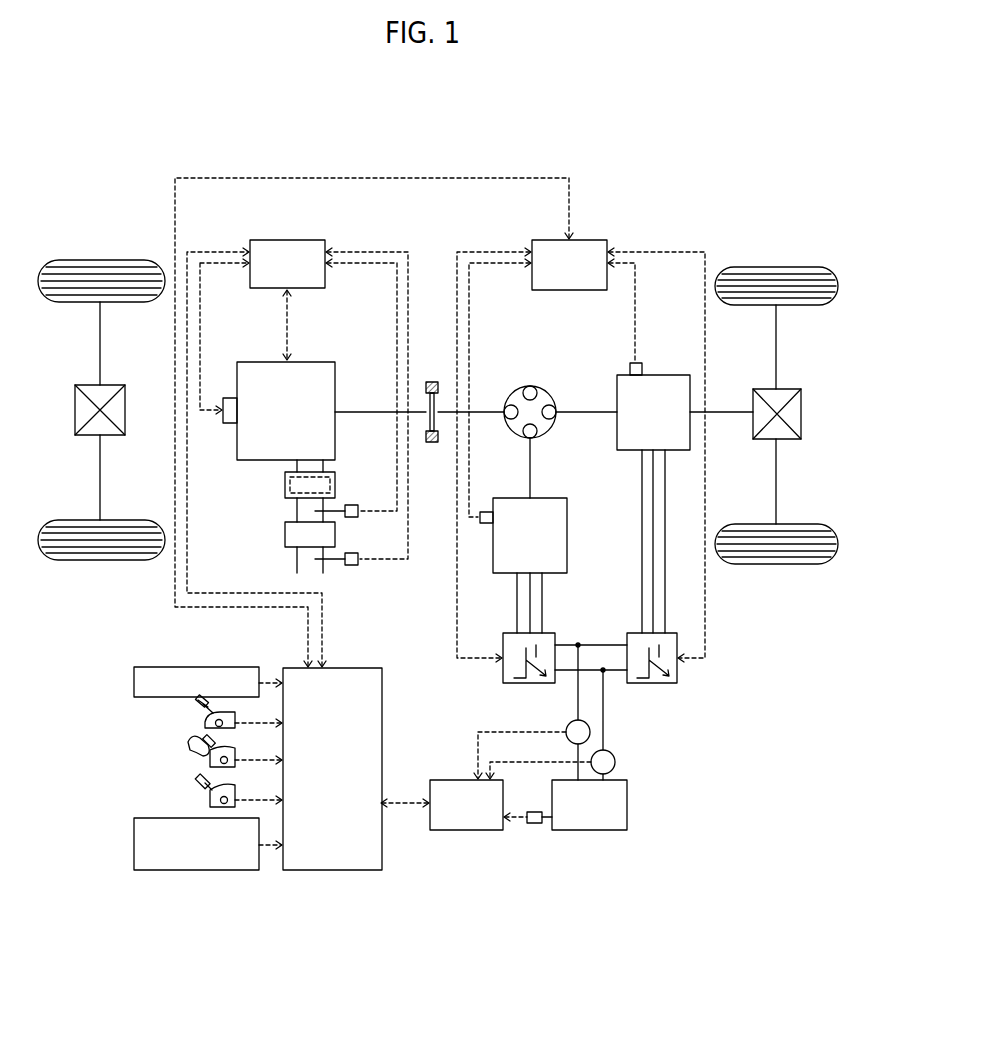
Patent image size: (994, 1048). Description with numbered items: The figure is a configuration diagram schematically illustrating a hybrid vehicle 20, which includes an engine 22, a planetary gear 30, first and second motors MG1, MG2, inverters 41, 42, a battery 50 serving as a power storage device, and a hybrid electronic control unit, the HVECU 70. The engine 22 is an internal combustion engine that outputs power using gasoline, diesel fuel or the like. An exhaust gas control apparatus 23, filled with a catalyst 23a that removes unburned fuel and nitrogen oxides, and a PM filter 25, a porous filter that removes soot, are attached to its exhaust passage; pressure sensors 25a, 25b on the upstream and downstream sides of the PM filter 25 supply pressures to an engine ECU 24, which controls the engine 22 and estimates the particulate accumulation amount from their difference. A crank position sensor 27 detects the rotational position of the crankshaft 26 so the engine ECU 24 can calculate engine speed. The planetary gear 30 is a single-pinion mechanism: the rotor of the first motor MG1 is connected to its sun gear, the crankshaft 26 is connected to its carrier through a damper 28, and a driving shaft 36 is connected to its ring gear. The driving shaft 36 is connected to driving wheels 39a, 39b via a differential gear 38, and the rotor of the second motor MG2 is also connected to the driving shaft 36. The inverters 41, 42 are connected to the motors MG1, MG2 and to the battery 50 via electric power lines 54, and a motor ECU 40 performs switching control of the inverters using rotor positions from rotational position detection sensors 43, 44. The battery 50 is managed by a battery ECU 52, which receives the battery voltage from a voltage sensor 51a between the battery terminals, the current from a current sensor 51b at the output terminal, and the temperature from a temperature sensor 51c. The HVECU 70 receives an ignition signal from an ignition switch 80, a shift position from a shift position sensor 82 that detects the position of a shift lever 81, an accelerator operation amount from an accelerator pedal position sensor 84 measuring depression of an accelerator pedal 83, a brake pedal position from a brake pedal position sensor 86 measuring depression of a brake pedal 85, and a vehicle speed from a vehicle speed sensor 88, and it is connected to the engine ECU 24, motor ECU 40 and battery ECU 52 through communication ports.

The hybrid vehicle 20 is at (690, 217).
The engine 22 is at (311, 361).
The exhaust gas control apparatus 23 is at (285, 477).
The catalyst 23a is at (290, 486).
The engine ECU 24 is at (285, 238).
The PM filter 25 is at (285, 536).
The pressure sensor 25a is at (350, 504).
The pressure sensor 25b is at (352, 566).
The crankshaft 26 is at (352, 410).
The crank position sensor 27 is at (230, 397).
The damper 28 is at (432, 381).
The planetary gear 30 is at (531, 385).
The driving shaft 36 is at (727, 410).
The differential gear 38 is at (789, 388).
The driving wheel 39a is at (778, 266).
The driving wheel 39b is at (772, 565).
The motor ECU 40 is at (578, 238).
The inverter 41 is at (546, 632).
The inverter 42 is at (672, 632).
The rotational position detection sensor 43 is at (486, 511).
The rotational position detection sensor 44 is at (630, 362).
The battery 50 is at (627, 803).
The voltage sensor 51a is at (615, 762).
The current sensor 51b is at (590, 732).
The temperature sensor 51c is at (536, 825).
The battery ECU 52 is at (455, 778).
The electric power lines 54 is at (580, 700).
The HVECU 70 is at (357, 667).
The ignition switch 80 is at (133, 683).
The shift lever 81 is at (197, 711).
The shift position sensor 82 is at (205, 724).
The accelerator pedal 83 is at (190, 747).
The accelerator pedal position sensor 84 is at (210, 762).
The brake pedal 85 is at (205, 788).
The brake pedal position sensor 86 is at (212, 806).
The vehicle speed sensor 88 is at (133, 845).
The first motor MG1 is at (552, 497).
The second motor MG2 is at (665, 374).